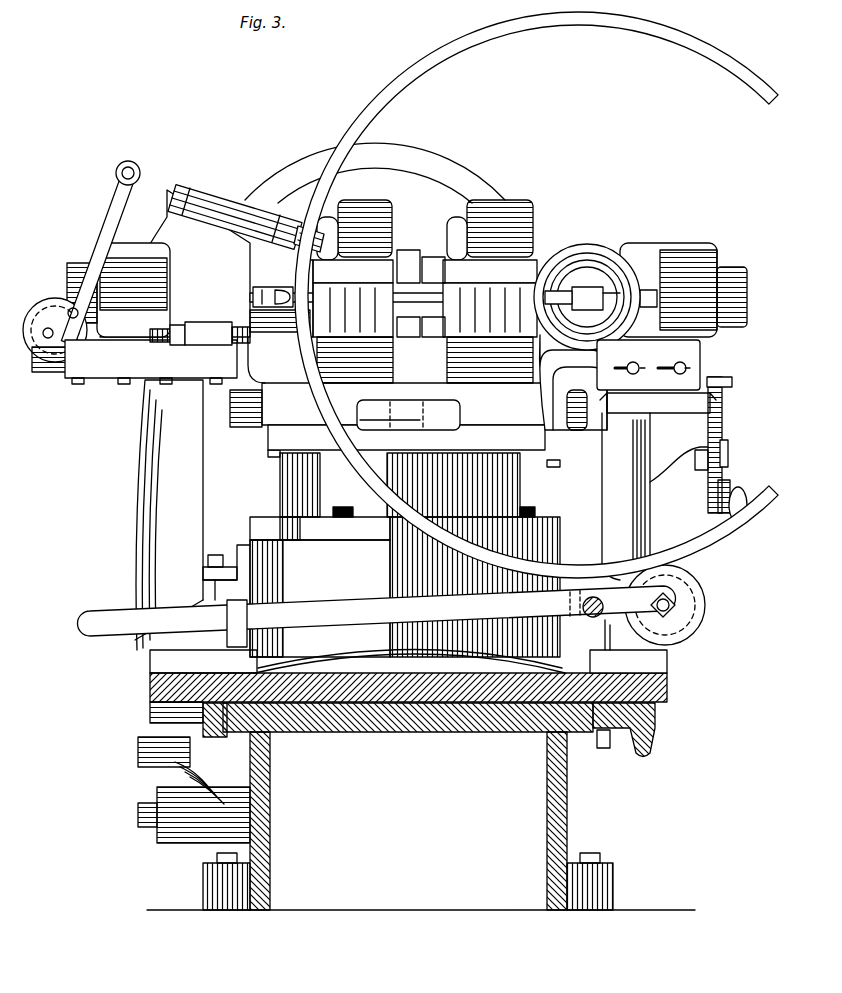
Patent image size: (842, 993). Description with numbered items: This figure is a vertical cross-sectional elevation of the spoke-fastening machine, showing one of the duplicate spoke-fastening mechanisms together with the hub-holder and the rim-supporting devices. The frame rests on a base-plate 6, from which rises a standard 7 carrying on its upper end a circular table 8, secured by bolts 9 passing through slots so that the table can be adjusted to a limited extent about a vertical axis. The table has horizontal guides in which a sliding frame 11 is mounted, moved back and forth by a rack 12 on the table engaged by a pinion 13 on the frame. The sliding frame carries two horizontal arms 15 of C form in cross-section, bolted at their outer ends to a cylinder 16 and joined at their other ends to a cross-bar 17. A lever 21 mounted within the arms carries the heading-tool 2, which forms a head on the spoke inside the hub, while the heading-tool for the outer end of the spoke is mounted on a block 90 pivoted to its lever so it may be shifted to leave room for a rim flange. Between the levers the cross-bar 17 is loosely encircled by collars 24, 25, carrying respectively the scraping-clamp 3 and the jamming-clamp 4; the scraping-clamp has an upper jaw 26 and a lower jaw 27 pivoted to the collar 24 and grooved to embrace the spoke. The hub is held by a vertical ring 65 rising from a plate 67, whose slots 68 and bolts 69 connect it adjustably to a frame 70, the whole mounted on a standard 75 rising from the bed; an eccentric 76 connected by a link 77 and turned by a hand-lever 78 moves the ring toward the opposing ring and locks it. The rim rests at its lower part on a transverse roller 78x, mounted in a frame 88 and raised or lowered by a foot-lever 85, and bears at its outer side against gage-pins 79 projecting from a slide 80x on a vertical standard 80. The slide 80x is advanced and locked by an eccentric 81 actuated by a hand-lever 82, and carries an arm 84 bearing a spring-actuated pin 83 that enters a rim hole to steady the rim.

The heading-tool 2 is at (603, 278).
The scraping-clamp 3 is at (479, 291).
The jamming-clamp 4 is at (366, 291).
The base-plate 6 is at (416, 791).
The standard 7 is at (407, 563).
The circular table 8 is at (320, 528).
The bolt 9 is at (552, 503).
The sliding frame 11 is at (408, 420).
The rack 12 is at (410, 450).
The pinion 13 is at (408, 415).
The horizontal arm 15 is at (668, 236).
The cylinder 16 is at (375, 173).
The cross-bar 17 is at (671, 281).
The lever 21 is at (648, 310).
The collar 24 is at (541, 262).
The collar 25 is at (312, 338).
The upper jaw 26 is at (541, 262).
The lower jaw 27 is at (543, 337).
The hub-holding ring 65 is at (583, 252).
The plate 67 is at (647, 356).
The slot 68 is at (630, 373).
The bolt 69 is at (680, 373).
The frame 70 is at (703, 360).
The standard 75 is at (635, 496).
The eccentric 76 is at (710, 473).
The link 77 is at (722, 420).
The hand-lever 78 is at (742, 501).
The transverse roller 78x is at (698, 614).
The gage-pin 79 is at (290, 333).
The vertical standard 80 is at (196, 526).
The slide 80x is at (157, 353).
The eccentric 81 is at (60, 314).
The hand-lever 82 is at (100, 253).
The spring-actuated pin 83 is at (305, 227).
The arm 84 is at (232, 208).
The foot-lever 85 is at (377, 616).
The frame 88 is at (628, 646).
The block 90 is at (253, 300).